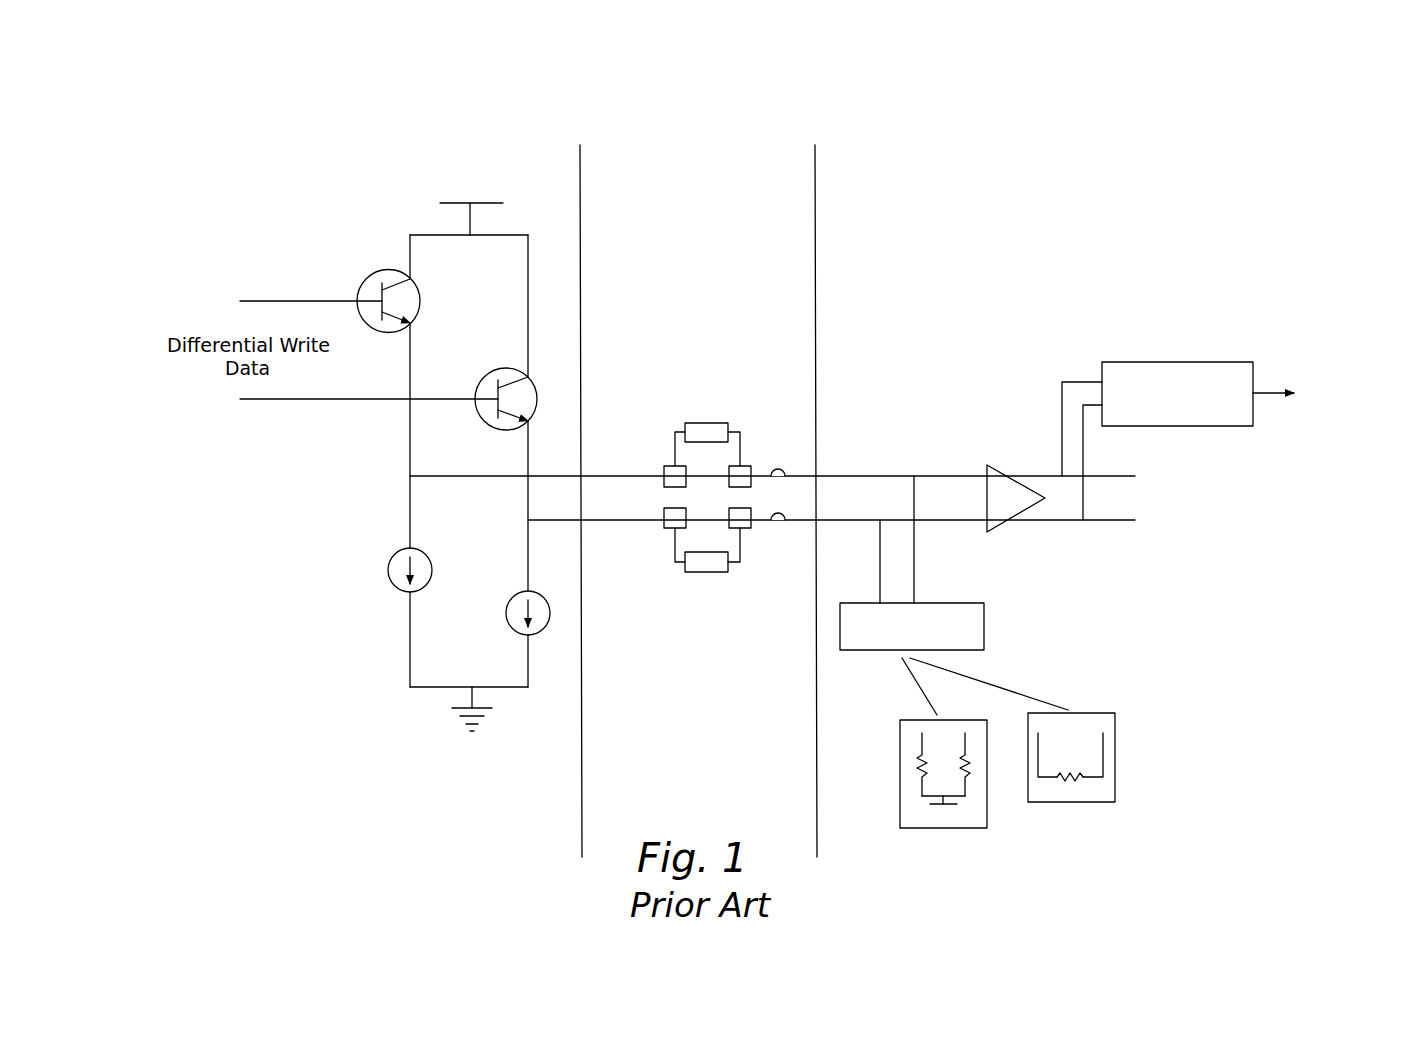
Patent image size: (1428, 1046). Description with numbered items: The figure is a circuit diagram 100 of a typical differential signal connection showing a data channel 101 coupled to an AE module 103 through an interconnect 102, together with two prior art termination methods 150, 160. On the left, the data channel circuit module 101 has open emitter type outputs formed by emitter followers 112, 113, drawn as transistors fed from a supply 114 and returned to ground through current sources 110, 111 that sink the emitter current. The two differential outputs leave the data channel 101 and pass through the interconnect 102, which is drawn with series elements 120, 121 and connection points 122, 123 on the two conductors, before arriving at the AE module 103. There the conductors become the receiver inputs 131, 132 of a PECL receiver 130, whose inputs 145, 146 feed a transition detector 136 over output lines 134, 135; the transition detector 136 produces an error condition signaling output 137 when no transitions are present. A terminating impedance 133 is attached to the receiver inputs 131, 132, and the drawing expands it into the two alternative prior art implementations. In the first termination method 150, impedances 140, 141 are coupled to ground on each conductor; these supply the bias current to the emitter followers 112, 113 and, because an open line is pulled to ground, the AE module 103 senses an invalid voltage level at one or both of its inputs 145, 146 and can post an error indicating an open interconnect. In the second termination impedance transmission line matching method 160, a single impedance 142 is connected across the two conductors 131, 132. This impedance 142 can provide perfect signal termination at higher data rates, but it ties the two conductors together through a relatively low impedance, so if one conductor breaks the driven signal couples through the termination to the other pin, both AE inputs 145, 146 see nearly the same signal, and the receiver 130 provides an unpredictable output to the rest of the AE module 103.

The circuit diagram 100 is at (913, 96).
The data channel 101 is at (470, 408).
The interconnect 102 is at (712, 116).
The AE module 103 is at (1126, 119).
The current source I17 110 is at (406, 560).
The current source I18 111 is at (510, 603).
The emitter follower 112 is at (416, 303).
The emitter follower 113 is at (526, 403).
The supply voltage Vcc 114 is at (494, 202).
The interconnect resistor 120 is at (707, 439).
The interconnect resistor 121 is at (707, 558).
The interconnect signal line connection 122 is at (782, 459).
The interconnect signal line connection 123 is at (782, 532).
The PECL receiver 130 is at (1040, 521).
The receiver input 131 is at (772, 465).
The receiver input 132 is at (831, 509).
The terminating impedance 133 is at (953, 595).
The receiver output line 134 is at (1103, 429).
The receiver output line 135 is at (1114, 479).
The transition detector 136 is at (1167, 361).
The error condition signaling output 137 is at (1309, 417).
The impedance 140 is at (920, 756).
The impedance 141 is at (967, 755).
The impedance 142 is at (1078, 783).
The AE input 145 is at (987, 473).
The AE input 146 is at (987, 523).
The termination method 150 is at (925, 828).
The termination impedance transmission line matching method 160 is at (1100, 802).